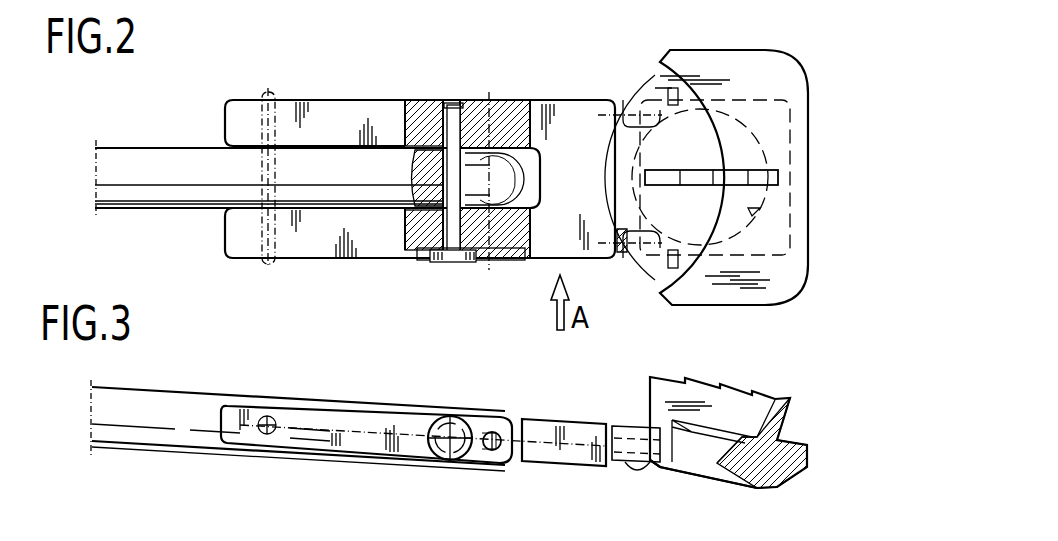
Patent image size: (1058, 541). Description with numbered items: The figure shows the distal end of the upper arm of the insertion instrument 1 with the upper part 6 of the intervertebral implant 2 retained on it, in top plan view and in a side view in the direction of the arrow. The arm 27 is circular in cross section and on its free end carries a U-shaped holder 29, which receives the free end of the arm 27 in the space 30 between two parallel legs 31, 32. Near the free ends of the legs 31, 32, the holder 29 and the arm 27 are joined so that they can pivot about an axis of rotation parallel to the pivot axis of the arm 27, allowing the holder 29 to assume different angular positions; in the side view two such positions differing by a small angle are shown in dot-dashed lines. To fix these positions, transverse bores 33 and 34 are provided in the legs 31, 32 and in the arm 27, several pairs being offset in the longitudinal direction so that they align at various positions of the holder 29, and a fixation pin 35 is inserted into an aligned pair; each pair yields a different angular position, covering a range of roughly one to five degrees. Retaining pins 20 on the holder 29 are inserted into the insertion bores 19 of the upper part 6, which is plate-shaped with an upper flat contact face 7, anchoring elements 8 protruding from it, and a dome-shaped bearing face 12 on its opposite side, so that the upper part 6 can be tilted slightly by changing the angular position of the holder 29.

In FIG. 2, the insertion instrument 1 is at (135, 131).
In FIG. 3, the insertion instrument 1 is at (129, 452).
In FIG. 2, the intervertebral implant 2 is at (812, 45).
In FIG. 3, the intervertebral implant 2 is at (801, 380).
In FIG. 2, the upper part 6 is at (806, 281).
In FIG. 3, the upper part 6 is at (800, 438).
In FIG. 2, the upper flat contact face 7 is at (790, 262).
In FIG. 3, the upper flat contact face 7 is at (805, 446).
In FIG. 2, the anchoring elements 8 is at (760, 178).
In FIG. 3, the anchoring elements 8 is at (763, 412).
In FIG. 2, the dome-shaped bearing face 12 is at (760, 210).
In FIG. 3, the dome-shaped bearing face 12 is at (740, 472).
In FIG. 2, the insertion bores 19 is at (651, 100).
In FIG. 3, the insertion bores 19 is at (625, 470).
In FIG. 2, the retaining pins 20 is at (625, 100).
In FIG. 3, the retaining pins 20 is at (647, 470).
In FIG. 2, the arm 27 is at (173, 150).
In FIG. 3, the arm 27 is at (157, 388).
In FIG. 2, the U-shaped holder 29 is at (579, 101).
In FIG. 3, the U-shaped holder 29 is at (575, 420).
In FIG. 2, the space 30 is at (319, 148).
In FIG. 2, the leg 31 is at (246, 110).
In FIG. 2, the leg 32 is at (243, 241).
In FIG. 3, the leg 32 is at (240, 446).
In FIG. 2, the transverse bores 33 is at (488, 130).
In FIG. 3, the transverse bores 33 is at (492, 431).
In FIG. 2, the transverse bores 34 is at (446, 170).
In FIG. 3, the transverse bores 34 is at (484, 453).
In FIG. 2, the fixation pin 35 is at (453, 250).
In FIG. 3, the fixation pin 35 is at (441, 416).